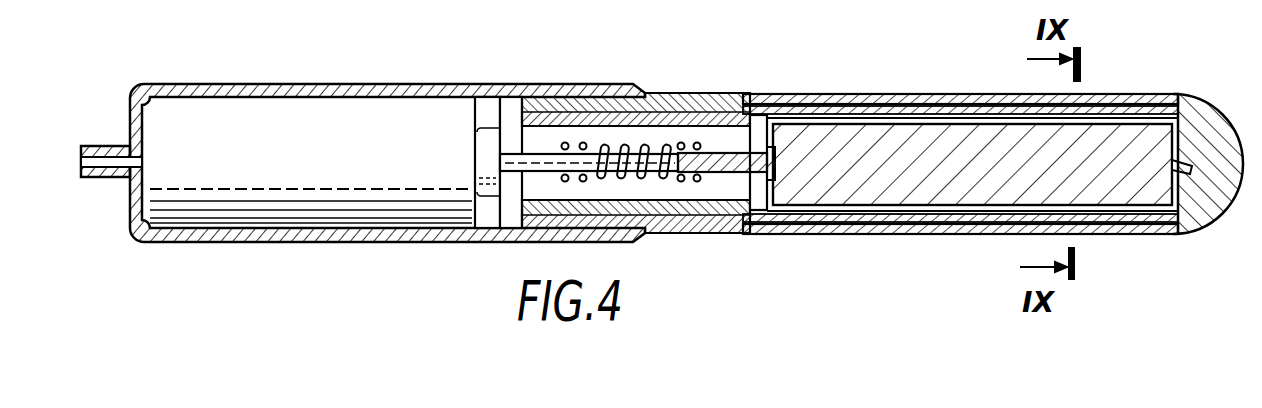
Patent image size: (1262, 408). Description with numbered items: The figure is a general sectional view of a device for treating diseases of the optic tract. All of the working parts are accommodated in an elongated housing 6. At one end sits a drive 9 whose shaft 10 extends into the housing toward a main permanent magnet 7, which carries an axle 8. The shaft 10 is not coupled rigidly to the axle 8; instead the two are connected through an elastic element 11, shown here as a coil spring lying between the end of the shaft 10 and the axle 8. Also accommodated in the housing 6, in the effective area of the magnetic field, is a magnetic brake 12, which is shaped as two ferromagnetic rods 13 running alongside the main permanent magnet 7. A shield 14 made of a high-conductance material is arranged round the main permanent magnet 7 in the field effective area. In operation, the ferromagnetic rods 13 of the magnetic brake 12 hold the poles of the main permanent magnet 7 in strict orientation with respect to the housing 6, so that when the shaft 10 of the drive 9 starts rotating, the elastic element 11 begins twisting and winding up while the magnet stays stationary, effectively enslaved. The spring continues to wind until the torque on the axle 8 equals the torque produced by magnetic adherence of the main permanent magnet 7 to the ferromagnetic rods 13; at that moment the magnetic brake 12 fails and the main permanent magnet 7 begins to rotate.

The housing 6 is at (668, 94).
The main permanent magnet 7 is at (813, 137).
The axle 8 is at (725, 160).
The drive 9 is at (434, 108).
The shaft 10 is at (533, 160).
The elastic element 11 is at (603, 140).
The magnetic brake 12 is at (873, 88).
The ferromagnetic rods 13 is at (928, 232).
The shield 14 is at (945, 102).